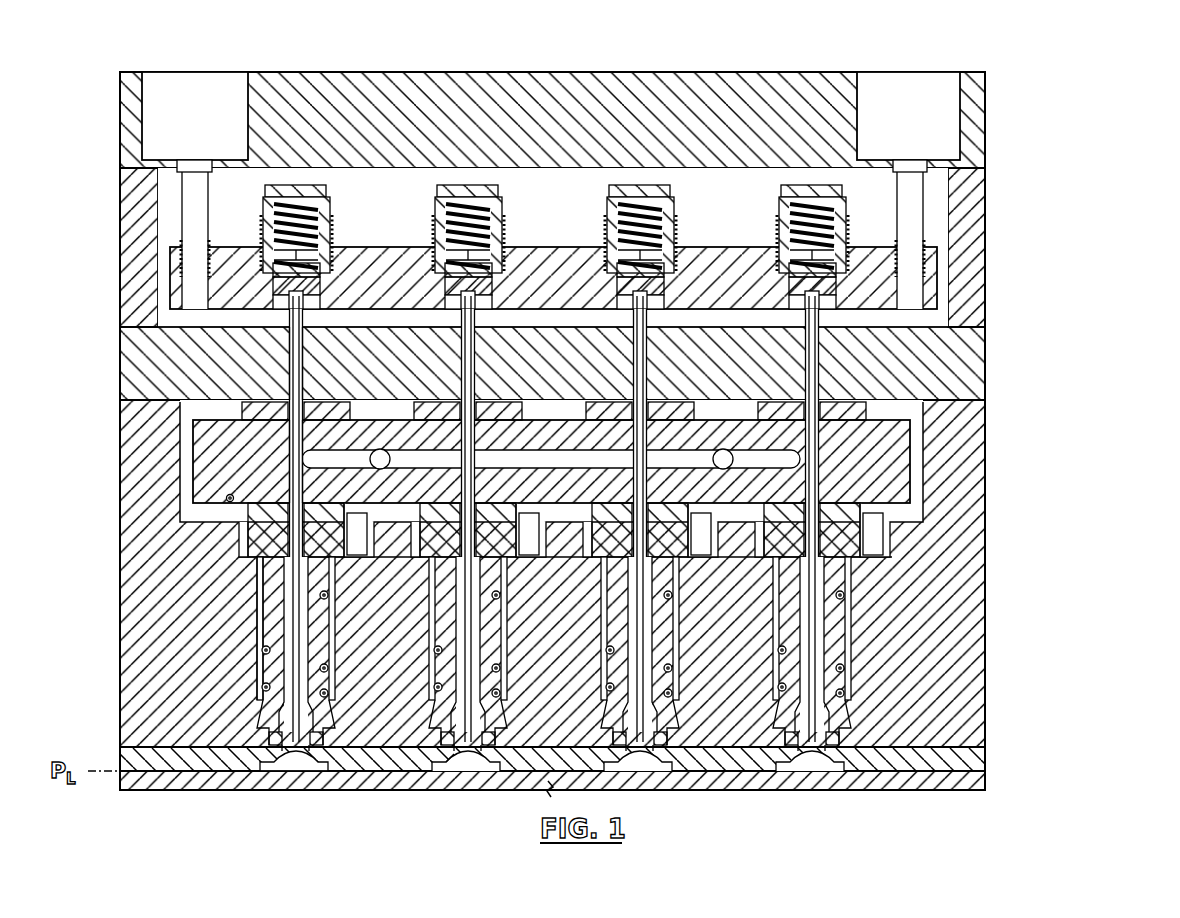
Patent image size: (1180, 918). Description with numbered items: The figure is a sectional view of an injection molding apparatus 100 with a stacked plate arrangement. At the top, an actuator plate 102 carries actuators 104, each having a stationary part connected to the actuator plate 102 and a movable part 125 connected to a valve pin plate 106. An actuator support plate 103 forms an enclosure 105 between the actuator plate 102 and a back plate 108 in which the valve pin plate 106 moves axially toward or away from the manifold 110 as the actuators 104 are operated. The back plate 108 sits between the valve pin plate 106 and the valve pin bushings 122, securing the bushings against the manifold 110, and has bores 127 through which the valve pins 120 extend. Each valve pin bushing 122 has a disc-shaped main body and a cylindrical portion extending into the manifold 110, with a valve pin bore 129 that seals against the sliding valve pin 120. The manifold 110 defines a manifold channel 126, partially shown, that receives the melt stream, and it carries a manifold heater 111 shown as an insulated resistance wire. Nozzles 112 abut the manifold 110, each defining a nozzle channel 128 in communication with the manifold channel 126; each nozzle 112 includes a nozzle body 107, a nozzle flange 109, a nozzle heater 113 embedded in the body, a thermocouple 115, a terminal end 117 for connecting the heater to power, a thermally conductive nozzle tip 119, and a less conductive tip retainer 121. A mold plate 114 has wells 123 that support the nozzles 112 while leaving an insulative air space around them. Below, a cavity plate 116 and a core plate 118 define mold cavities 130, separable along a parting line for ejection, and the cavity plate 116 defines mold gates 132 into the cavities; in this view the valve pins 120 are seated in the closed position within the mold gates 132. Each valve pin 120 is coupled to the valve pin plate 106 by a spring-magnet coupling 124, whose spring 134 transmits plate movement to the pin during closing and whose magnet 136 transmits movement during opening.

The injection molding apparatus 100 is at (1093, 128).
The actuator plate 102 is at (975, 124).
The actuator support plate 103 is at (978, 200).
The actuator 104 is at (947, 100).
The enclosure 105 is at (570, 217).
The valve pin plate 106 is at (922, 278).
The nozzle body 107 is at (275, 623).
The back plate 108 is at (975, 355).
The nozzle flange 109 is at (257, 537).
The manifold 110 is at (895, 432).
The manifold heater 111 is at (228, 498).
The nozzle 112 is at (838, 632).
The nozzle heater 113 is at (268, 690).
The mold plate 114 is at (978, 668).
The thermocouple 115 is at (330, 723).
The cavity plate 116 is at (984, 757).
The terminal end 117 is at (360, 545).
The core plate 118 is at (822, 783).
The nozzle tip 119 is at (467, 753).
The valve pin 120 is at (814, 578).
The tip retainer 121 is at (448, 758).
The valve pin bushing 122 is at (855, 405).
The well 123 is at (268, 578).
The spring-magnet coupling 124 is at (868, 237).
The movable part 125 is at (905, 190).
The manifold channel 126 is at (775, 460).
The bore 127 is at (288, 358).
The nozzle channel 128 is at (818, 538).
The valve pin bore 129 is at (288, 427).
The mold cavity 130 is at (790, 757).
The mold gate 132 is at (636, 757).
The spring 134 is at (267, 195).
The magnet 136 is at (270, 277).